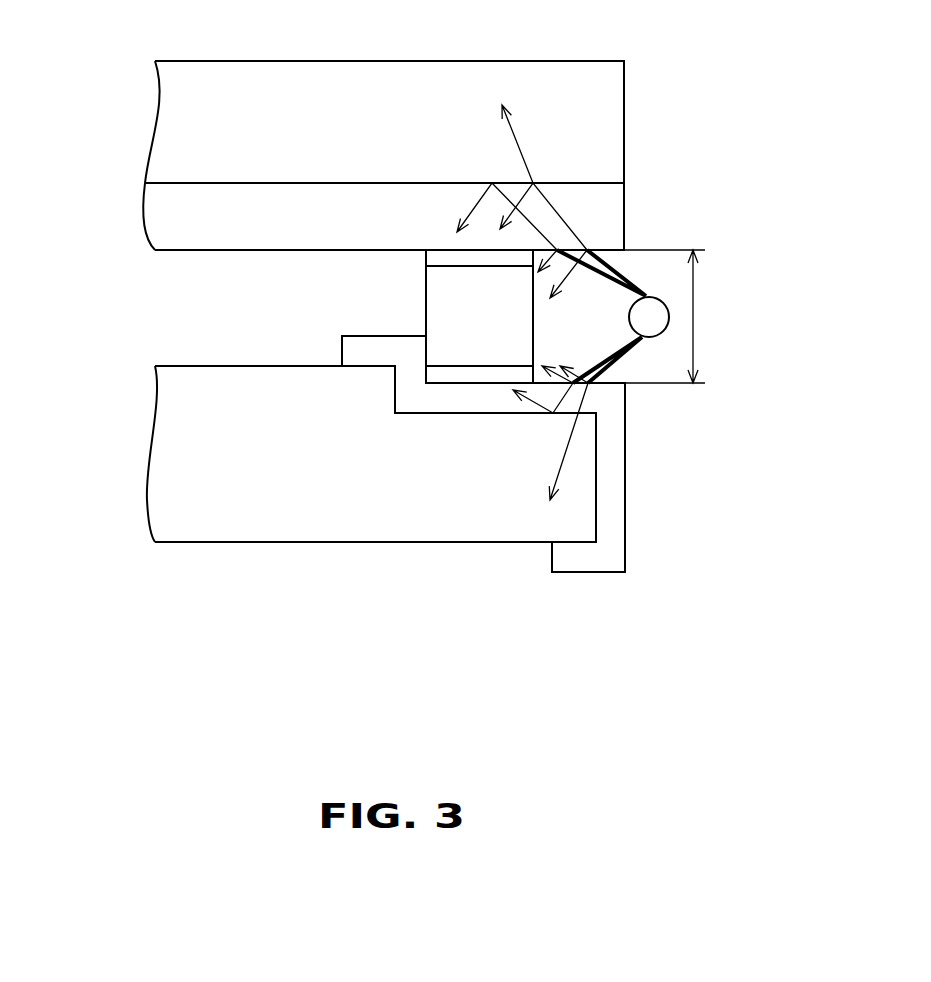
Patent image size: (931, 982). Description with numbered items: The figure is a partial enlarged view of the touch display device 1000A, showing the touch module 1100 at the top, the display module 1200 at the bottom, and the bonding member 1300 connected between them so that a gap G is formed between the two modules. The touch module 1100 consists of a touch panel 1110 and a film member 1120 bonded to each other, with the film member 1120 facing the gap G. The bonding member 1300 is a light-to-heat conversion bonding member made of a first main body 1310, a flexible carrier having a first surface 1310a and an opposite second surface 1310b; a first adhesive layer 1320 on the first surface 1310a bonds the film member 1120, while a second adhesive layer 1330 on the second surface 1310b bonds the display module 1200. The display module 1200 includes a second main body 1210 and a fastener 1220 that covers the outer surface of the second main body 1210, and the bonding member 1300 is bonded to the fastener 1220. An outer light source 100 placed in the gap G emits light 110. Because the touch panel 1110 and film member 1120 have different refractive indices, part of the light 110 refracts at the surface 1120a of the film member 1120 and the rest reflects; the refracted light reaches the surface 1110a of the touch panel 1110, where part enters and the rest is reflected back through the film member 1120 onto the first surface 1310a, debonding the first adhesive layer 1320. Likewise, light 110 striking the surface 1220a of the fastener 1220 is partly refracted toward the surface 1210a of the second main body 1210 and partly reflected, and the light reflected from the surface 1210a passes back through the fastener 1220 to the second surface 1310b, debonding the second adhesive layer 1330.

The touch display device 1000A is at (838, 710).
The touch module 1100 is at (683, 95).
The touch panel 1110 is at (208, 112).
The surface of touch panel 1110a is at (188, 184).
The film member 1120 is at (268, 207).
The surface of film member 1120a is at (185, 250).
The display module 1200 is at (645, 520).
The second main body 1210 is at (210, 502).
The surface of second main body 1210a is at (497, 415).
The fastener 1220 is at (577, 558).
The surface of fastener 1220a is at (607, 386).
The bonding member 1300 is at (397, 285).
The first main body 1310 is at (465, 313).
The first surface 1310a is at (448, 263).
The second surface 1310b is at (463, 367).
The first adhesive layer 1320 is at (465, 258).
The second adhesive layer 1330 is at (438, 377).
The outer light source 100 is at (650, 312).
The light 110 is at (556, 235).
The gap G is at (674, 316).